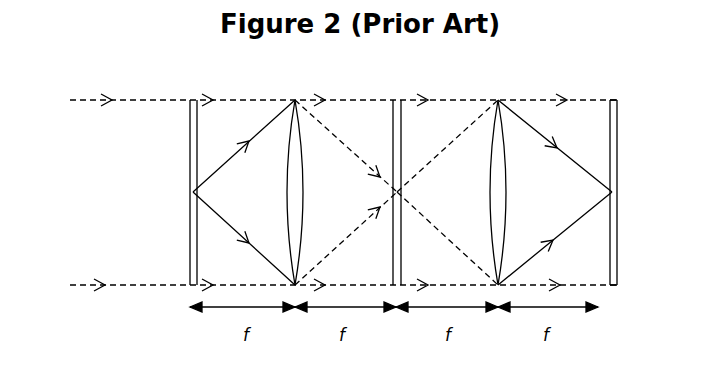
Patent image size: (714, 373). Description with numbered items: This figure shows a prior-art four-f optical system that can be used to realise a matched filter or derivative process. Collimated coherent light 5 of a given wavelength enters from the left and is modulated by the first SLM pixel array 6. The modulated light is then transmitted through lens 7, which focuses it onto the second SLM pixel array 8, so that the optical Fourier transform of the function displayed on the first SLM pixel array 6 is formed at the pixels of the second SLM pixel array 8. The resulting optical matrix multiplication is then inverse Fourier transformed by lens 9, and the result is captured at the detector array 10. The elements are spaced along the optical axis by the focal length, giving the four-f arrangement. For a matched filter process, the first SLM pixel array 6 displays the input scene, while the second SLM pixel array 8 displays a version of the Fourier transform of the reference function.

The collimated coherent light 5 is at (70, 270).
The SLM pixel array 6 is at (190, 145).
The lens 7 is at (282, 187).
The second SLM pixel array 8 is at (405, 160).
The lens 9 is at (507, 133).
The detector array 10 is at (620, 133).